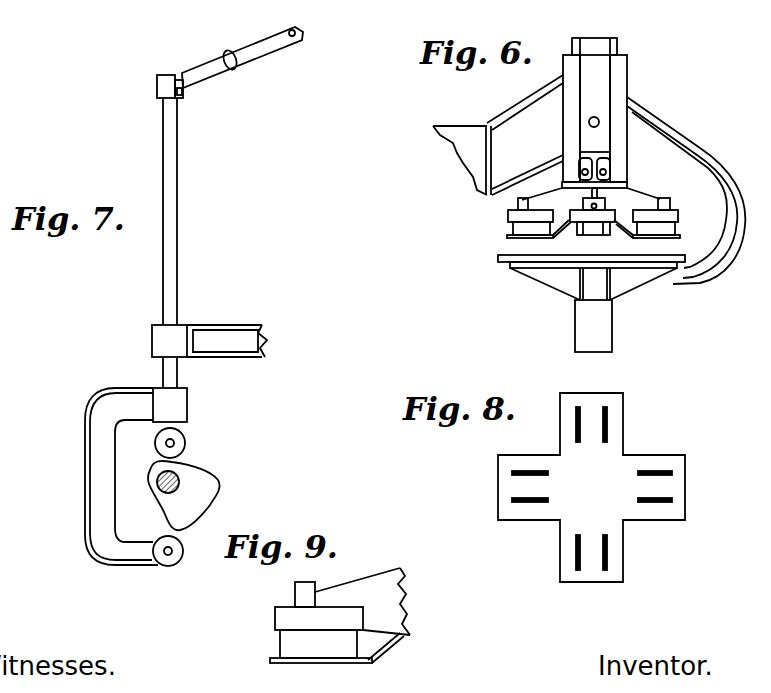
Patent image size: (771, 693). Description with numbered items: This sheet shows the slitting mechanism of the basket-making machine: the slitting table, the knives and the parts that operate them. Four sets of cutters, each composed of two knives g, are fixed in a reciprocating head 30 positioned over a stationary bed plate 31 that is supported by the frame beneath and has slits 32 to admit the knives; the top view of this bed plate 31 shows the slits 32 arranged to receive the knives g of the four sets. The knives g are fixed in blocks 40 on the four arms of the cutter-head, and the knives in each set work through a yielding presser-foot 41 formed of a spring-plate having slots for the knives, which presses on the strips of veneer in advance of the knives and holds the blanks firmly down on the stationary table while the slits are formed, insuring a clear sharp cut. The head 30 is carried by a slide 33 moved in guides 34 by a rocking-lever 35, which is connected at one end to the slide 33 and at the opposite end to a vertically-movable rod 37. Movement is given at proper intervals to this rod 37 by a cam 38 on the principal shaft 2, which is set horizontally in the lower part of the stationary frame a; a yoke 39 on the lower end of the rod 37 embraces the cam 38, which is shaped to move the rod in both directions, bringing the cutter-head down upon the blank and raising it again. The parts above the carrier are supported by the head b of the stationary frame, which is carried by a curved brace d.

In FIG. 7, the shaft 2 is at (160, 477).
In FIG. 6, the reciprocating head 30 is at (633, 204).
In FIG. 9, the reciprocating head 30 is at (410, 576).
In FIG. 6, the stationary bed plate 31 is at (506, 257).
In FIG. 8, the stationary bed plate 31 is at (665, 461).
In FIG. 8, the slits 32 is at (574, 418).
In FIG. 6, the slide 33 is at (600, 46).
In FIG. 6, the guides 34 is at (619, 72).
In FIG. 7, the rocking-lever 35 is at (277, 41).
In FIG. 7, the vertically-movable rod 37 is at (177, 210).
In FIG. 7, the cam 38 is at (204, 479).
In FIG. 7, the yoke 39 is at (92, 470).
In FIG. 6, the blocks 40 is at (512, 216).
In FIG. 9, the blocks 40 is at (283, 617).
In FIG. 6, the yielding presser-foot 41 is at (505, 236).
In FIG. 9, the yielding presser-foot 41 is at (376, 655).
In FIG. 7, the stationary frame a is at (262, 326).
In FIG. 6, the head b is at (469, 124).
In FIG. 6, the curved brace d is at (713, 161).
In FIG. 6, the knives g is at (508, 228).
In FIG. 9, the knives g is at (290, 648).